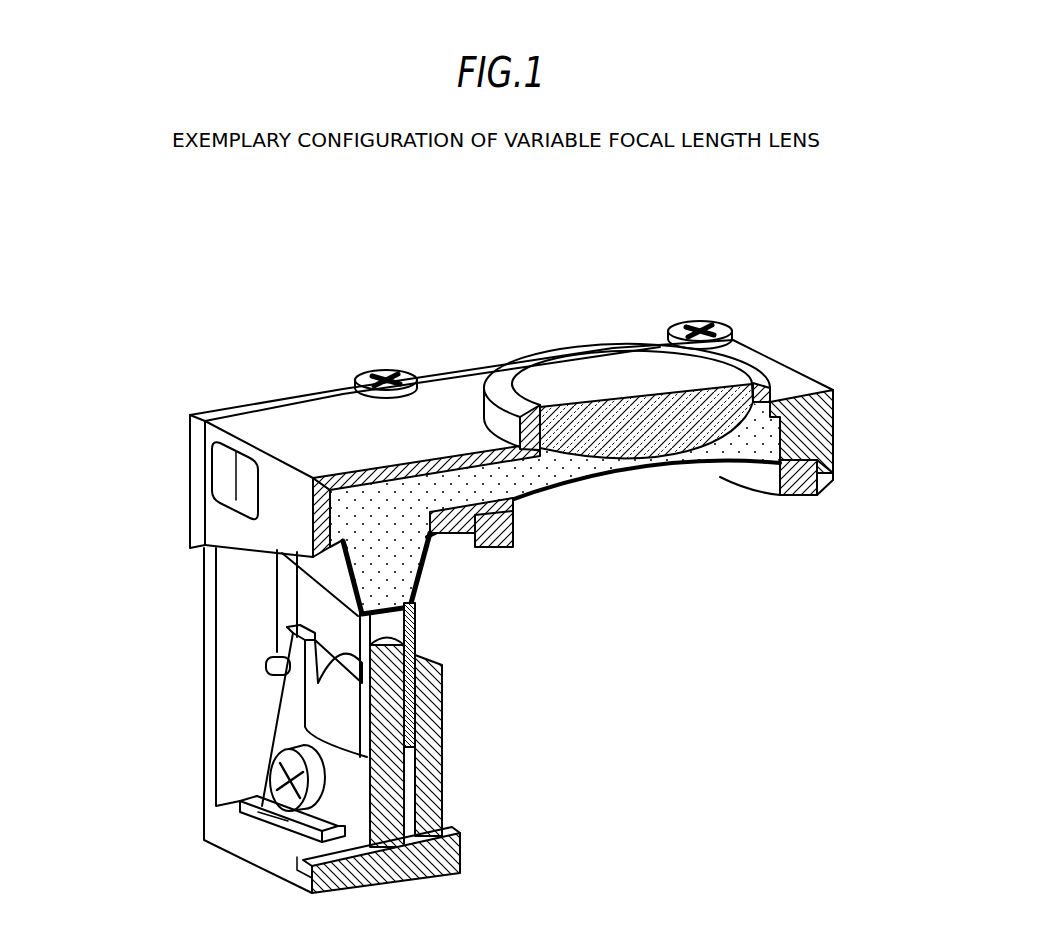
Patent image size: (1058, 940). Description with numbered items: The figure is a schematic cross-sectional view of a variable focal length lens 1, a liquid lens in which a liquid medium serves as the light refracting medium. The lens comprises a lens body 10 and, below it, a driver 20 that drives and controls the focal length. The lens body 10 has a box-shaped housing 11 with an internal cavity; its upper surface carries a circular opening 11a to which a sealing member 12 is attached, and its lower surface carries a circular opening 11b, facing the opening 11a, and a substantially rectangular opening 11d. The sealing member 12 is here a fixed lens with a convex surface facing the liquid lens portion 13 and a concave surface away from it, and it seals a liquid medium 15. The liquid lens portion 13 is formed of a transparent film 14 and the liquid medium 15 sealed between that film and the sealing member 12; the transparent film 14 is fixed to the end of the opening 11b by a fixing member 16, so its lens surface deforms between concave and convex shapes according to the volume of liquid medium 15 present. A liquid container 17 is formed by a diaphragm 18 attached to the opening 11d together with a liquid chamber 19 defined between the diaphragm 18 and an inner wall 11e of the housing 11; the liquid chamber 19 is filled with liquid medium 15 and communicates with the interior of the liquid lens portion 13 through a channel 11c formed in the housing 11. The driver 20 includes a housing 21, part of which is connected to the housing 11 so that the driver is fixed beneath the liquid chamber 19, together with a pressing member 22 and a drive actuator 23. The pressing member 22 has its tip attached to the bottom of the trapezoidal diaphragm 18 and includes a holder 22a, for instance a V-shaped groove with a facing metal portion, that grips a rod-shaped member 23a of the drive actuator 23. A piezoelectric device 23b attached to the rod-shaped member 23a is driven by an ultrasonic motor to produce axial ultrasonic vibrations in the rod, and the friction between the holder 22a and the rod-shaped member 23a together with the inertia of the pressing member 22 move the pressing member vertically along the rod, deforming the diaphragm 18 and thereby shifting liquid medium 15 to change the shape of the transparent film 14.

The variable focal length lens 1 is at (330, 326).
The lens body 10 is at (850, 320).
The housing 11 is at (448, 388).
The circular opening 11a is at (499, 385).
The circular opening 11b is at (770, 443).
The channel 11c is at (508, 547).
The substantially rectangular opening 11d is at (435, 552).
The inner wall 11e is at (431, 463).
The sealing member 12 is at (611, 363).
The liquid lens portion 13 is at (673, 558).
The transparent film 14 is at (622, 478).
The liquid medium 15 is at (580, 468).
The fixing member 16 is at (801, 497).
The liquid container 17 is at (362, 472).
The liquid chamber 19 is at (380, 530).
The diaphragm 18 is at (430, 575).
The driver 20 is at (528, 660).
The housing 21 is at (243, 855).
The pressing member 22 is at (440, 733).
The holder 22a is at (413, 628).
The drive actuator 23 is at (381, 826).
The rod-shaped member 23a is at (395, 773).
The piezoelectric device 23b is at (458, 845).